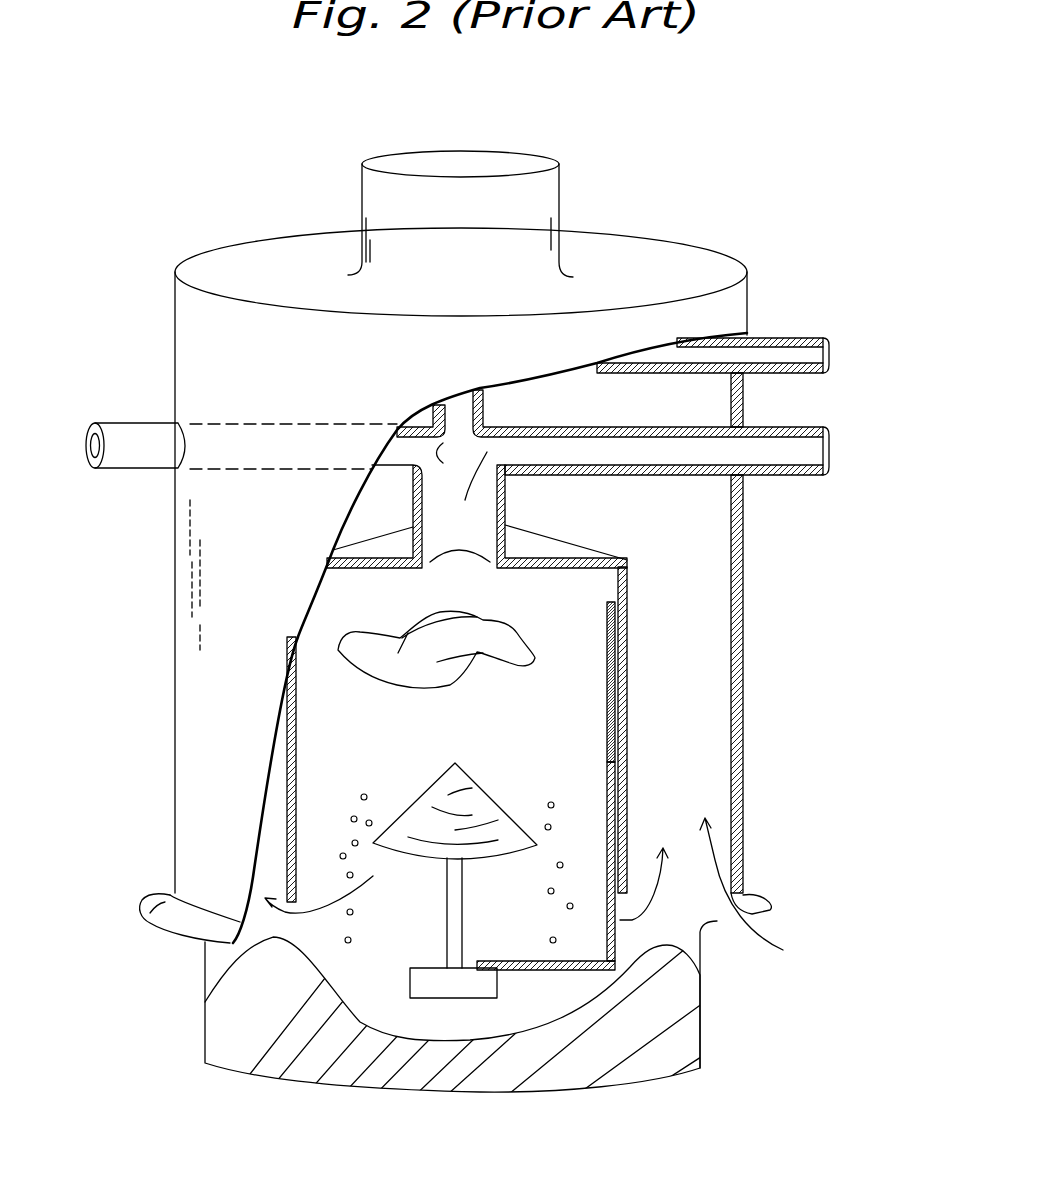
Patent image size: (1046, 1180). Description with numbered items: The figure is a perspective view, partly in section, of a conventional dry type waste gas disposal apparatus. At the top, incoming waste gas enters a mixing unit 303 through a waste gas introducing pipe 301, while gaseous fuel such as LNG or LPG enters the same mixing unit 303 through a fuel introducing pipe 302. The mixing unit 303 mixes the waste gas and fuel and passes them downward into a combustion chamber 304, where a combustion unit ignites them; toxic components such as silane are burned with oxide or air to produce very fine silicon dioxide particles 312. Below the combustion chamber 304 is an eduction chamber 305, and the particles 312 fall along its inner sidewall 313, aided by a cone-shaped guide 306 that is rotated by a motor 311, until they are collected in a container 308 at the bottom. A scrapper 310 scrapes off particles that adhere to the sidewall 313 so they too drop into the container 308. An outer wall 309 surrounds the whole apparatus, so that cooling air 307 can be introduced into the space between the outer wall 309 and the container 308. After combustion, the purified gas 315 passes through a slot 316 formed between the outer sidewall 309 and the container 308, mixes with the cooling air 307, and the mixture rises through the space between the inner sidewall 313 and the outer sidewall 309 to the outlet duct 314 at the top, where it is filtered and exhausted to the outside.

The waste gas introducing pipe 301 is at (790, 340).
The fuel introducing pipe 302 is at (125, 430).
The mixing unit 303 is at (493, 447).
The combustion chamber 304 is at (447, 617).
The eduction chamber 305 is at (367, 765).
The cone-shaped guide 306 is at (480, 798).
The cooling air 307 is at (769, 942).
The container 308 is at (702, 953).
The outer wall 309 is at (745, 655).
The scrapper 310 is at (607, 646).
The motor 311 is at (453, 990).
The silicon dioxide particles 312 is at (663, 1030).
The inner sidewall 313 is at (627, 617).
The outlet duct 314 is at (370, 197).
The purified gas 315 is at (660, 873).
The slot 316 is at (187, 963).